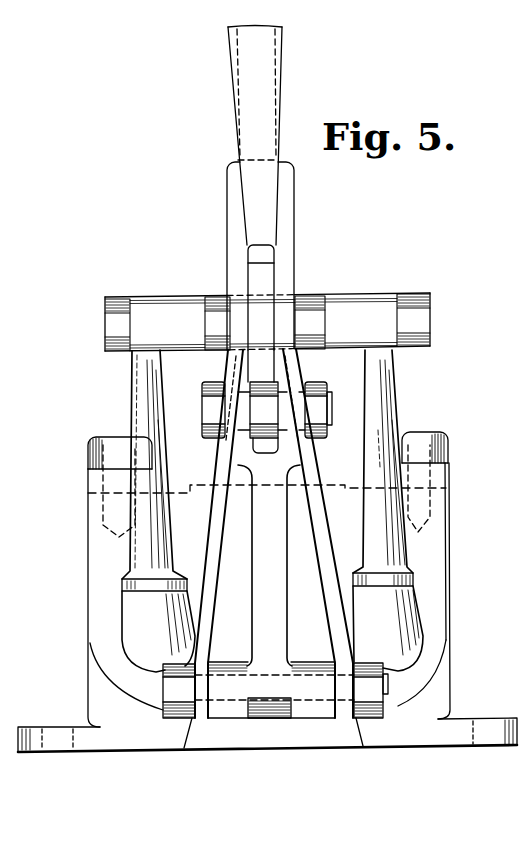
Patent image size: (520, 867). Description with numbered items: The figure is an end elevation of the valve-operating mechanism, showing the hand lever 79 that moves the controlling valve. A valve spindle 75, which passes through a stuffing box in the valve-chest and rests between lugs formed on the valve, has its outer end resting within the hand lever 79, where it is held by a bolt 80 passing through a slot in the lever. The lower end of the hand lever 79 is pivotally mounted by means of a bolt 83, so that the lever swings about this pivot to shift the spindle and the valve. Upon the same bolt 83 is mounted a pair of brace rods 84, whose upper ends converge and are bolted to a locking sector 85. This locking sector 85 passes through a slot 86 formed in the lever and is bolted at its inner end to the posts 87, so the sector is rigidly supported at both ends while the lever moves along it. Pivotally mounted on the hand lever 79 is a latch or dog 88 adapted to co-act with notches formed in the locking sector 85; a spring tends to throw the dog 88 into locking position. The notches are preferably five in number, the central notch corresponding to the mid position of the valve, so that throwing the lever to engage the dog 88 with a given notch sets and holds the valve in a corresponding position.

The valve spindle 75 is at (262, 407).
The hand lever 79 is at (285, 218).
The bolt 80 is at (334, 410).
The bolt 83 is at (385, 695).
The brace rods 84 is at (328, 537).
The locking sector 85 is at (262, 290).
The slot 86 is at (268, 364).
The posts 87 is at (143, 395).
The latch or dog 88 is at (249, 205).